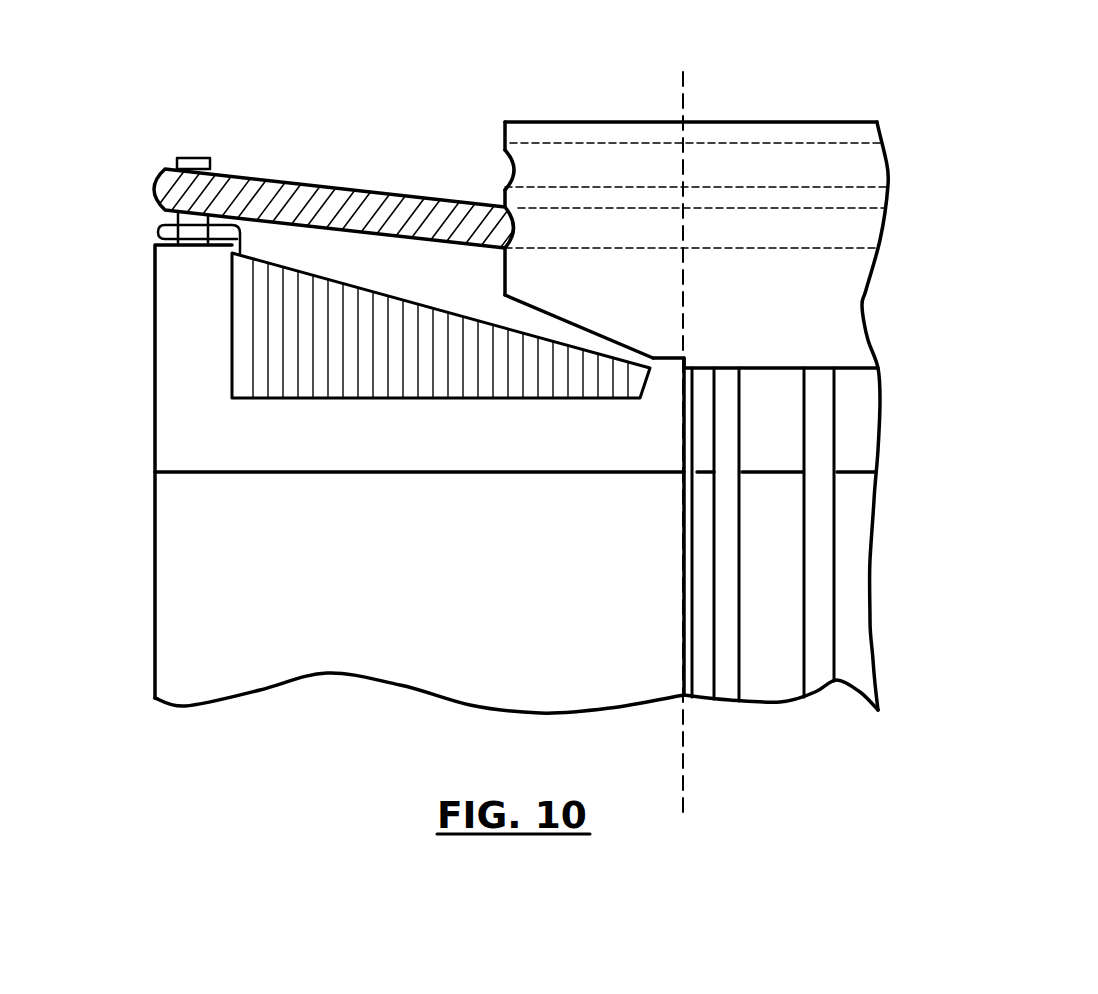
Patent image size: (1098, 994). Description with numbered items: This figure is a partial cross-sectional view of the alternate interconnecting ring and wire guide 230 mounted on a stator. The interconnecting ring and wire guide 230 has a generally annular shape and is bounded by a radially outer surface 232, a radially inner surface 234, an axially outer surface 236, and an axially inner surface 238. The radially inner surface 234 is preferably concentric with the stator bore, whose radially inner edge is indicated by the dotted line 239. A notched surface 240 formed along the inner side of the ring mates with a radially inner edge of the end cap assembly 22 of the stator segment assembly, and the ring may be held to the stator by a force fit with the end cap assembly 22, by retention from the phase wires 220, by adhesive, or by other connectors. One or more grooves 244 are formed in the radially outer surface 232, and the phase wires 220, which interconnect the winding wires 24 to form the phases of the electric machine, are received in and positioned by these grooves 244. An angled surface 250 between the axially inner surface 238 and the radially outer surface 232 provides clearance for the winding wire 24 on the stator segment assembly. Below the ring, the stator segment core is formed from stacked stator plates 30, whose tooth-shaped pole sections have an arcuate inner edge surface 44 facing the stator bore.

The end cap assembly 22 is at (858, 420).
The winding wire 24 is at (241, 243).
The stator plate 30 is at (411, 583).
The arcuate inner edge surface 44 is at (682, 567).
The phase wire 220 is at (252, 178).
The interconnecting ring and wire guide 230 is at (968, 205).
The radially outer surface 232 is at (502, 128).
The radially inner surface 234 is at (872, 163).
The axially outer surface 236 is at (683, 82).
The axially inner surface 238 is at (773, 365).
The dotted line 239 is at (775, 120).
The notched surface 240 is at (695, 340).
The groove 244 is at (519, 163).
The angled surface 250 is at (528, 297).